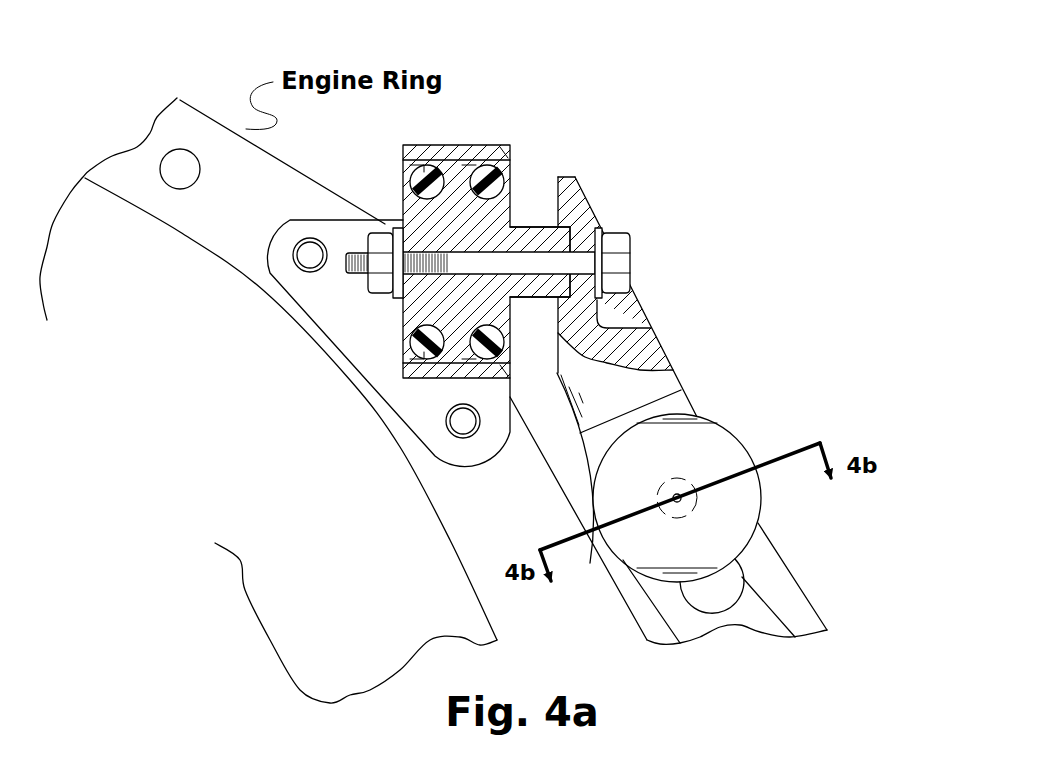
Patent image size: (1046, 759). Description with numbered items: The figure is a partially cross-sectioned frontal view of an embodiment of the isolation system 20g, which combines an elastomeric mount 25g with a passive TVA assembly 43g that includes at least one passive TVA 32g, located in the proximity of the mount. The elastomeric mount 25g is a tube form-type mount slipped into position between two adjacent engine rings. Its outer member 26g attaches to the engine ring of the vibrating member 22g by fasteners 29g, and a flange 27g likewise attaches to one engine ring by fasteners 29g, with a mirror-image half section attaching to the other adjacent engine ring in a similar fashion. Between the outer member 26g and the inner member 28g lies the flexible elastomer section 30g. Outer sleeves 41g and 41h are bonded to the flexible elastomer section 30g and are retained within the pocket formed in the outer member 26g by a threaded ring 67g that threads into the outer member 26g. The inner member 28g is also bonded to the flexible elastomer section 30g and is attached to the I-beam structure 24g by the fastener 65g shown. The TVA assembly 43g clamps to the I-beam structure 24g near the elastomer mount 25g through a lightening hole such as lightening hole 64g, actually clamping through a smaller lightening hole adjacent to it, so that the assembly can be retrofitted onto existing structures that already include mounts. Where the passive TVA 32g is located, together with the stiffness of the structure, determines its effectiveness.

The isolation system 20g is at (715, 330).
The vibrating member 22g is at (413, 660).
The I-beam structure 24g is at (667, 367).
The elastomeric mount 25g is at (494, 212).
The outer member 26g is at (333, 353).
The flange 27g is at (313, 305).
The inner member 28g is at (576, 177).
The fasteners 29g is at (293, 262).
The flexible elastomer section 30g is at (402, 185).
The passive TVA 32g is at (757, 477).
The outer sleeve 41g is at (422, 147).
The outer sleeve 41h is at (515, 173).
The passive TVA assembly 43g is at (750, 447).
The lightening hole 64g is at (744, 580).
The fastener 65g is at (632, 238).
The threaded ring 67g is at (511, 165).